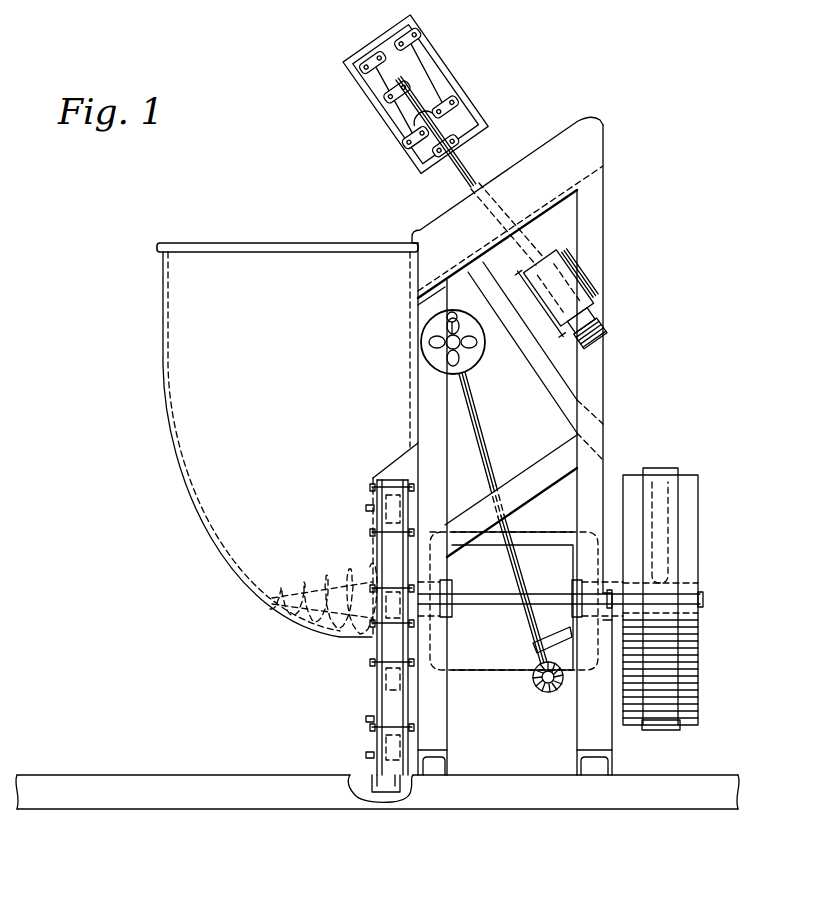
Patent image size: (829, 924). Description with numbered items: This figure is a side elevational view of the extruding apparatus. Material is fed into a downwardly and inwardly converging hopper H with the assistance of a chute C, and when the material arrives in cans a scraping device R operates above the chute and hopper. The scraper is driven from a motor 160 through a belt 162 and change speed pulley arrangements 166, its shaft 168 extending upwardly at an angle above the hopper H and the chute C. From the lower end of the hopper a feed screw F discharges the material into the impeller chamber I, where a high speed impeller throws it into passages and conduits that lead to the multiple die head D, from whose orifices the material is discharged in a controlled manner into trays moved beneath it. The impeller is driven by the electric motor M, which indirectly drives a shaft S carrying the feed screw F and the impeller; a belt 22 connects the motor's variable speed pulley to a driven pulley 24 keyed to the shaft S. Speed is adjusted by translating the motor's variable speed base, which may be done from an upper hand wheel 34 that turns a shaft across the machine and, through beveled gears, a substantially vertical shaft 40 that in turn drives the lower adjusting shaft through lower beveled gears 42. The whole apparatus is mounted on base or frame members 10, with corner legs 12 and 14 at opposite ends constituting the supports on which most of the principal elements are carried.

The base or frame members 10 is at (698, 784).
The corner leg 12 is at (597, 385).
The corner leg 14 is at (440, 493).
The belt 22 is at (668, 468).
The driven pulley 24 is at (690, 500).
The hand wheel 34 is at (474, 354).
The substantially vertical shaft 40 is at (482, 426).
The beveled gears 42 is at (534, 688).
The motor 160 is at (597, 273).
The belt 162 is at (604, 302).
The change speed pulley arrangements 166 is at (612, 319).
The scraper shaft 168 is at (472, 160).
The scraping device R is at (362, 99).
The chute C is at (577, 128).
The hopper H is at (176, 359).
The impeller chamber I is at (390, 553).
The feed screw F is at (297, 620).
The die head D is at (361, 783).
The electric motor M is at (528, 538).
The shaft S is at (492, 593).